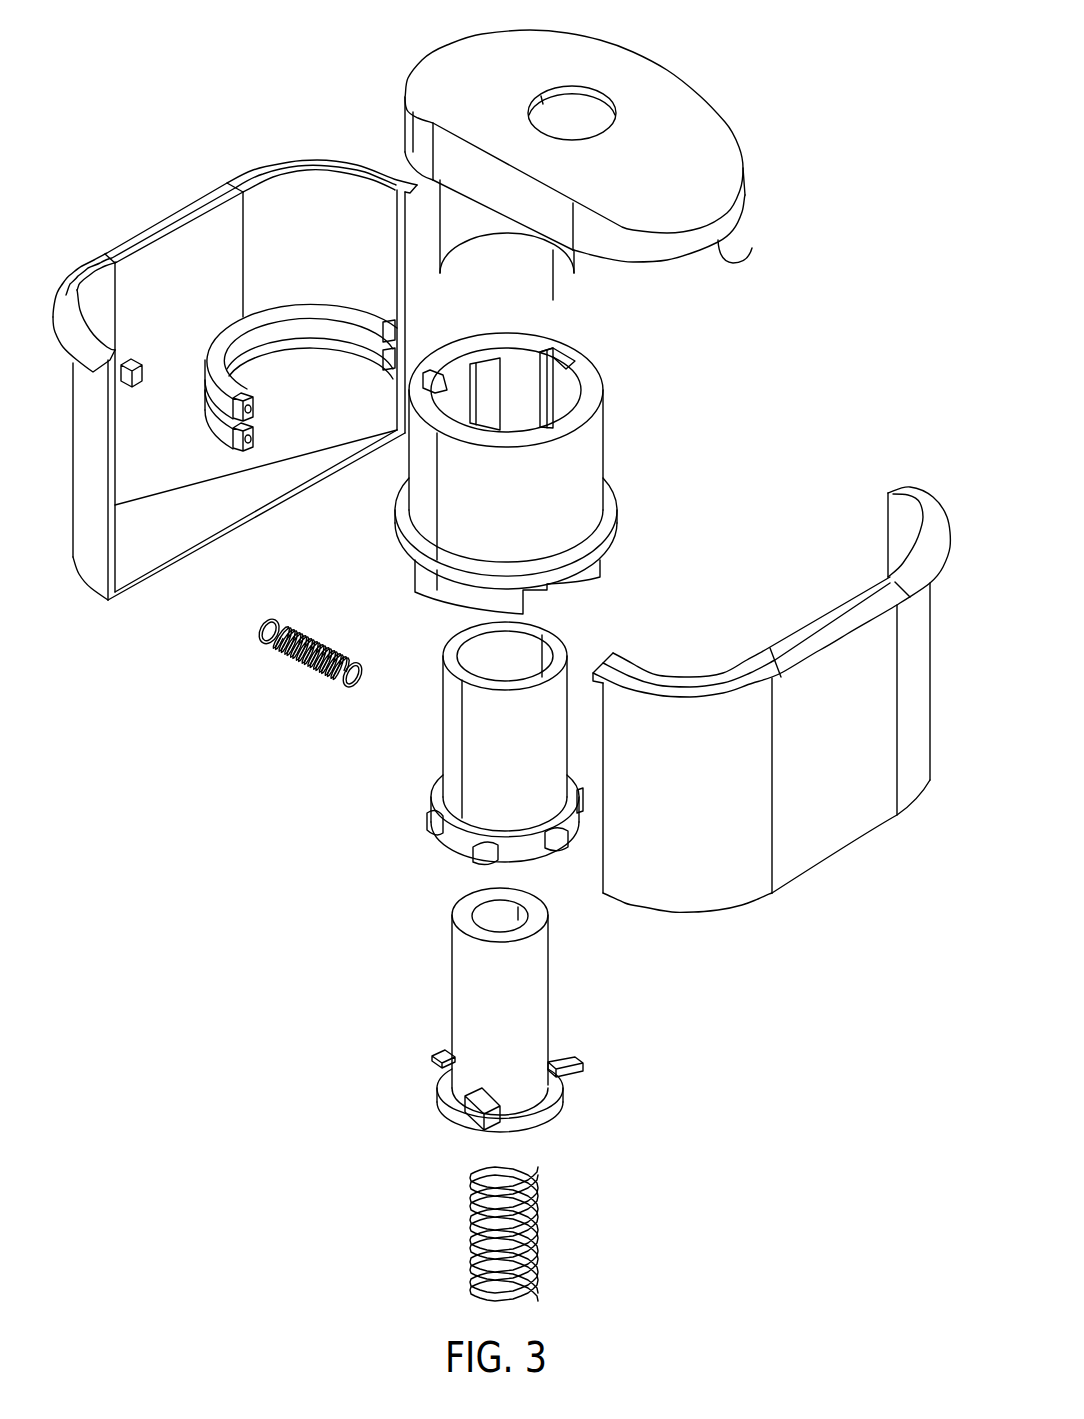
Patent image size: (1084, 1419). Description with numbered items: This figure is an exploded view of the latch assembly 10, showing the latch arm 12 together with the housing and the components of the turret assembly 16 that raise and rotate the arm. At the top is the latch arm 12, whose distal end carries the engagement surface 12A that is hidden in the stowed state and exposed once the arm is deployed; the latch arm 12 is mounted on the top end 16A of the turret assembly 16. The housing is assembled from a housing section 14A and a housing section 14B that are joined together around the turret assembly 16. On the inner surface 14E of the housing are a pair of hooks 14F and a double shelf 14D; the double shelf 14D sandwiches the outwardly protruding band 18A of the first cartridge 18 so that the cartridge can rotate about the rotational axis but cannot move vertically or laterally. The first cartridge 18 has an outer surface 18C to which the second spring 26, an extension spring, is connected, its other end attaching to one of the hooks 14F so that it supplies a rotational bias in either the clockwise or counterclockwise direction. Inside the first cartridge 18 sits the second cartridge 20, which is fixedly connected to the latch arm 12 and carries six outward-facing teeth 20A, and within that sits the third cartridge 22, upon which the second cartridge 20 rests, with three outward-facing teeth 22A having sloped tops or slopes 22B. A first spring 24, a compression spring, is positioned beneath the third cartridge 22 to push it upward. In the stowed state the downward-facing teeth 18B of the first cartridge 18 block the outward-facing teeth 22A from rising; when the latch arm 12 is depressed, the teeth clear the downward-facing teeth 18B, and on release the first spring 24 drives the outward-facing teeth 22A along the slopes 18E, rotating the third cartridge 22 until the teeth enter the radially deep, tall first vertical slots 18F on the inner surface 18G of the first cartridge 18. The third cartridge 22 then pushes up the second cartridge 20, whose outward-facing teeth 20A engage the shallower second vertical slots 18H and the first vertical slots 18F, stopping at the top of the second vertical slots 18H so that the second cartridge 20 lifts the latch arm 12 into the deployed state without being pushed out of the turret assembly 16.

The latch assembly 10 is at (205, 118).
The latch arm 12 is at (710, 112).
The engagement surface 12A is at (738, 262).
The housing section 14A is at (117, 245).
The housing section 14B is at (833, 856).
The double shelf 14D is at (263, 441).
The inner surface 14E is at (170, 435).
The hooks 14F is at (143, 368).
The turret assembly 16 is at (687, 404).
The top end 16A is at (448, 360).
The first cartridge 18 is at (523, 470).
The band 18A is at (617, 520).
The downward-facing teeth 18B is at (600, 570).
The outer surface 18C is at (527, 500).
The slopes 18E is at (505, 607).
The first vertical slots 18F is at (560, 357).
The inner surface 18G is at (537, 410).
The second vertical slots 18H is at (488, 362).
The second cartridge 20 is at (500, 734).
The outward-facing teeth 20A is at (427, 827).
The third cartridge 22 is at (508, 1010).
The outward-facing teeth 22A is at (430, 1065).
The slopes 22B is at (485, 1107).
The first spring 24 is at (475, 1245).
The second spring 26 is at (293, 672).